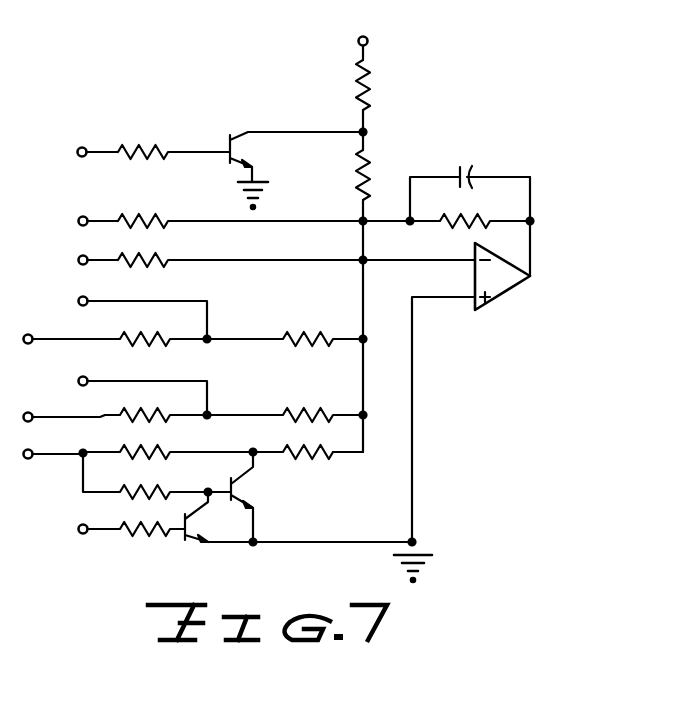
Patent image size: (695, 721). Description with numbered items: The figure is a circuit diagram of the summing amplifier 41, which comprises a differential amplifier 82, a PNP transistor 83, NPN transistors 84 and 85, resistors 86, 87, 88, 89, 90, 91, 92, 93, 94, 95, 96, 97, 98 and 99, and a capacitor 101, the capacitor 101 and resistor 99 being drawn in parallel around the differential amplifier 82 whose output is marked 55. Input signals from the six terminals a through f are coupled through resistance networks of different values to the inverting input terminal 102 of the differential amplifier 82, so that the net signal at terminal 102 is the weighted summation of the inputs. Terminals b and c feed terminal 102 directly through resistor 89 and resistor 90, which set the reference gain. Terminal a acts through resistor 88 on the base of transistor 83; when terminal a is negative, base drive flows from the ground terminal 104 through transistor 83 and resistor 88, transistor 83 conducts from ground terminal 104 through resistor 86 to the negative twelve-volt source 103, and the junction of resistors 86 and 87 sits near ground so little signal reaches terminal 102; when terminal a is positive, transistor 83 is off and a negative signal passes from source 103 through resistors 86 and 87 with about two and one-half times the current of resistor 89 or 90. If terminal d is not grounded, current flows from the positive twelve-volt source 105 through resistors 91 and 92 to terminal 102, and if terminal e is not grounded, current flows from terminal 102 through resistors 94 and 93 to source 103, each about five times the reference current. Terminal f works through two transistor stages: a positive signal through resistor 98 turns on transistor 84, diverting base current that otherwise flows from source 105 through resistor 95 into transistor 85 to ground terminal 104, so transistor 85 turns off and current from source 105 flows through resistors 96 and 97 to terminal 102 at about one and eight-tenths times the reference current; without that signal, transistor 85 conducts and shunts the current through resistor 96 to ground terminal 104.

The summing amplifier 41 is at (481, 356).
The output line 55 is at (530, 276).
The differential amplifier 82 is at (508, 296).
The PNP transistor 83 is at (250, 140).
The NPN transistor 84 is at (200, 518).
The NPN transistor 85 is at (246, 480).
The resistor 86 is at (356, 78).
The resistor 87 is at (370, 190).
The resistor 88 is at (146, 147).
The resistor 89 is at (146, 217).
The resistor 90 is at (150, 259).
The resistor 91 is at (160, 337).
The resistor 92 is at (321, 336).
The resistor 93 is at (155, 413).
The resistor 94 is at (322, 412).
The resistor 95 is at (160, 490).
The resistor 96 is at (164, 450).
The resistor 97 is at (306, 454).
The resistor 98 is at (140, 534).
The resistor 99 is at (470, 214).
The capacitor 101 is at (458, 168).
The inverting input terminal 102 is at (366, 260).
The negative 12-volt source 103 is at (358, 43).
The ground terminal 104 is at (262, 182).
The positive 12-volt source 105 is at (32, 344).